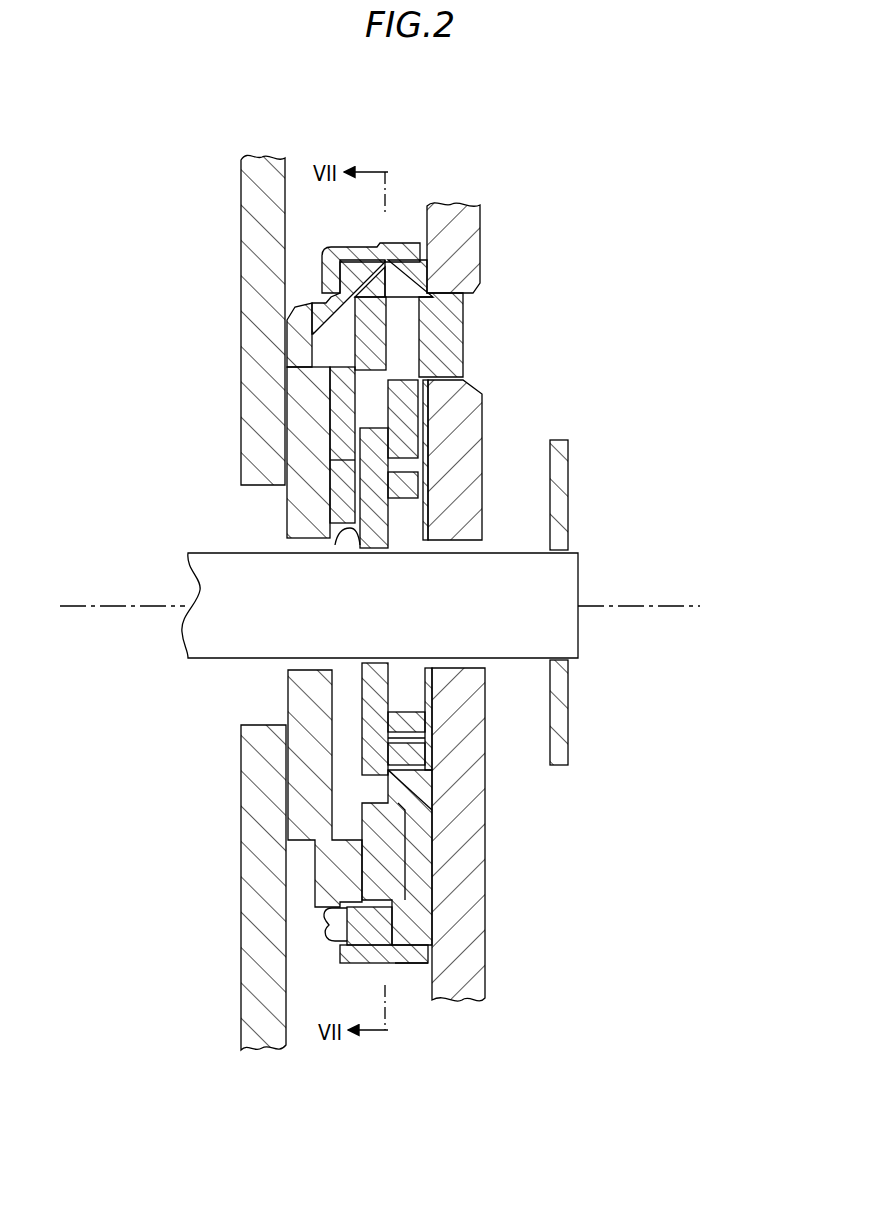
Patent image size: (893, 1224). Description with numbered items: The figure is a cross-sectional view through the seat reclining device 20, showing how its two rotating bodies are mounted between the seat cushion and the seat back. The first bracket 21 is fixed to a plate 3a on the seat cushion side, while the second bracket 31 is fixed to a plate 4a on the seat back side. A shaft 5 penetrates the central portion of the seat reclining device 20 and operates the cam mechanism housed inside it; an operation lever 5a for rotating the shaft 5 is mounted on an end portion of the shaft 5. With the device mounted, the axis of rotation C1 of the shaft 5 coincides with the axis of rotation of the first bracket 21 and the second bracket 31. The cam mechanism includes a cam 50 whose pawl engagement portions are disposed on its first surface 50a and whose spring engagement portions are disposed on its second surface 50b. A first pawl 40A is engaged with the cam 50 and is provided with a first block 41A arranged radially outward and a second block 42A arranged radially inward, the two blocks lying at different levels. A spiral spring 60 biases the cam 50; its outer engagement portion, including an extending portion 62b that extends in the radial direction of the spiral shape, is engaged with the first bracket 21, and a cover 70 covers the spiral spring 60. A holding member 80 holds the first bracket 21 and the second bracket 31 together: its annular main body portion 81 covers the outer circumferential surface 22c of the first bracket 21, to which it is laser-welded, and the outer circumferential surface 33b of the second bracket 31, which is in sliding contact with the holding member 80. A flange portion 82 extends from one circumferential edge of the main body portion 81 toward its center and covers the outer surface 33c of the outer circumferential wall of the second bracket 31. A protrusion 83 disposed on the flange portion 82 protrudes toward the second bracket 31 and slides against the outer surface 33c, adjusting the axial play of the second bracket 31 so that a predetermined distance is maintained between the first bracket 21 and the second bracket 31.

The plate 4a is at (240, 182).
The plate 3a is at (483, 232).
The seat reclining device 20 is at (405, 182).
The first bracket 21 is at (466, 331).
The first pawl 40A is at (172, 337).
The first block 41A is at (367, 328).
The second block 42A is at (338, 393).
The second bracket 31 is at (287, 457).
The extending portion 62b is at (420, 405).
The spiral spring 60 is at (413, 470).
The cam 50 is at (383, 520).
The first surface 50a is at (355, 530).
The second surface 50b is at (388, 532).
The axis of rotation C1 is at (685, 606).
The shaft 5 is at (580, 640).
The operation lever 5a is at (570, 737).
The cover 70 is at (430, 690).
The outer circumferential surface 22c is at (432, 970).
The outer surface 33c is at (330, 878).
The protrusion 83 is at (325, 913).
The holding member 80 is at (186, 937).
The flange portion 82 is at (345, 925).
The main body portion 81 is at (365, 958).
The outer circumferential surface 33b is at (398, 968).